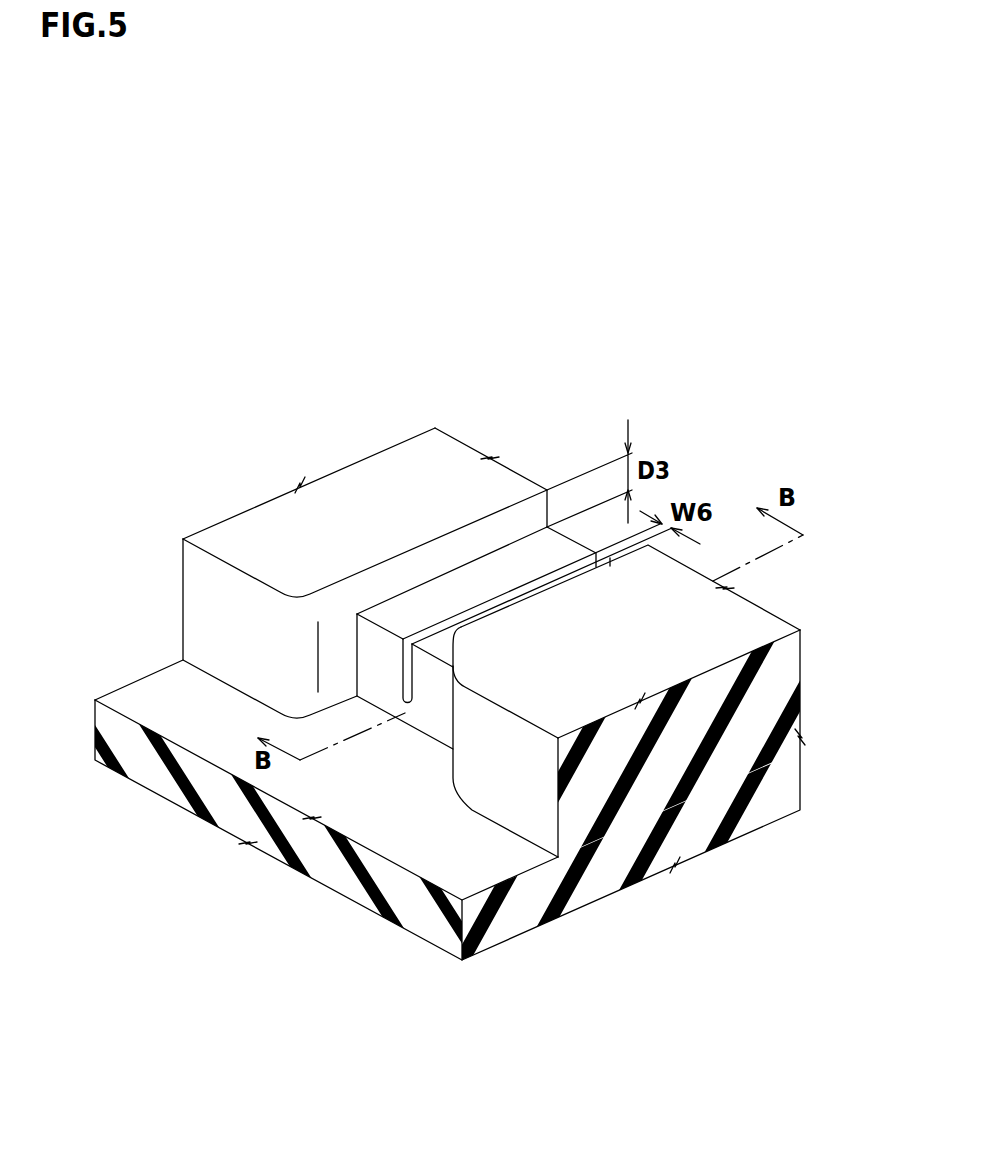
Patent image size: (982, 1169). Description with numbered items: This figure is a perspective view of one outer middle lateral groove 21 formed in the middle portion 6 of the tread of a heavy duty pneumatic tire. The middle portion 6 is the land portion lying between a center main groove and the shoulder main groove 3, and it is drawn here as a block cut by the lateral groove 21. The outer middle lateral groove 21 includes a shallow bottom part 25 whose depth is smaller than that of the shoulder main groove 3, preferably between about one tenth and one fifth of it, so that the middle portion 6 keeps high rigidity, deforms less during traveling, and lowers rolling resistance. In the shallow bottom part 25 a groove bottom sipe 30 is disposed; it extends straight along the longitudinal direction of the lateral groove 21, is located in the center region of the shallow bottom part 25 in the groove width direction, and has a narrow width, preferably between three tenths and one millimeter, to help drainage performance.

The shoulder main groove 3 is at (175, 700).
The middle portion 6 is at (287, 538).
The outer middle lateral groove 21 is at (513, 567).
The shallow bottom part 25 is at (480, 607).
The groove bottom sipe 30 is at (427, 605).